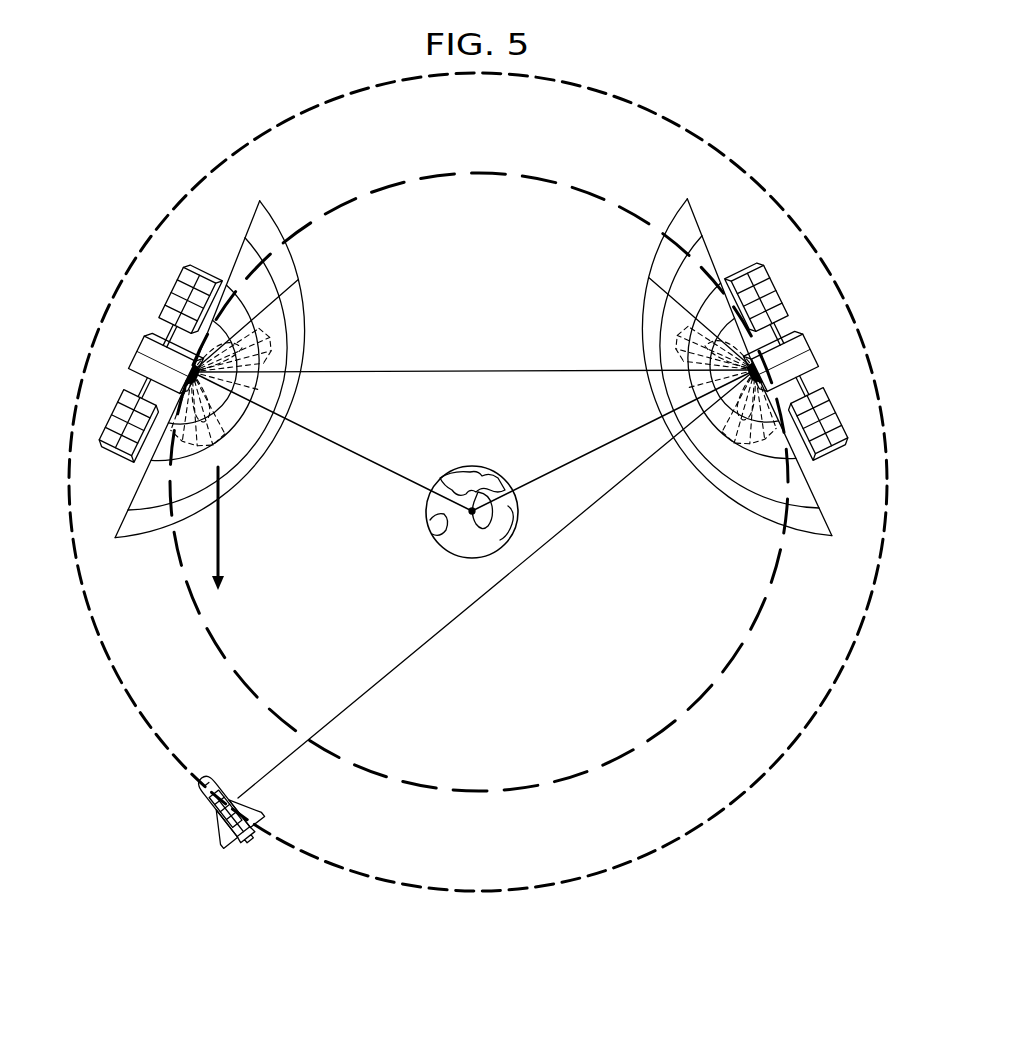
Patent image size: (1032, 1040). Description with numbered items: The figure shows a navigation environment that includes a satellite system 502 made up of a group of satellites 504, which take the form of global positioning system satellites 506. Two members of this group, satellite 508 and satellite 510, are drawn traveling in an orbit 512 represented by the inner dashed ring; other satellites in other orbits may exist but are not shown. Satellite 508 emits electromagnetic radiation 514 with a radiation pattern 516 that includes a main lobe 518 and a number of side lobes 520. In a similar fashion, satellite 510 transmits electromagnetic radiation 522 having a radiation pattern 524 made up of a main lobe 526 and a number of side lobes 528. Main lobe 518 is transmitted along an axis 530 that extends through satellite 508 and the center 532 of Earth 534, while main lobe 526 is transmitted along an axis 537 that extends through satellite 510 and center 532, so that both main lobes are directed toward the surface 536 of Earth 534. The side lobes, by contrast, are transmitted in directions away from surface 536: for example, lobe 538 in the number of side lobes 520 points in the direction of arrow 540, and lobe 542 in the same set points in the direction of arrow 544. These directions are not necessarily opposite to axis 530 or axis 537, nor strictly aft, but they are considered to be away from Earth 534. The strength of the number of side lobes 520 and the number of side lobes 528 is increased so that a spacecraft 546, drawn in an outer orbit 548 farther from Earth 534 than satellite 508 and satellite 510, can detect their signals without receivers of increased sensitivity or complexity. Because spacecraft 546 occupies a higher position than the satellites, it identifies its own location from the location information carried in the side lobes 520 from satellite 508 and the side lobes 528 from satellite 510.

The satellite system 502 is at (594, 108).
The group of satellites 504 is at (812, 277).
The global positioning system satellites 506 is at (118, 262).
The satellite 508 is at (207, 264).
The satellite 510 is at (742, 265).
The orbit 512 is at (607, 765).
The electromagnetic radiation 514 is at (300, 250).
The radiation pattern 516 is at (264, 332).
The main lobe 518 is at (260, 391).
The number of side lobes 520 is at (188, 456).
The electromagnetic radiation 522 is at (647, 320).
The radiation pattern 524 is at (661, 262).
The main lobe 526 is at (673, 397).
The number of side lobes 528 is at (746, 455).
The axis 530 is at (362, 458).
The center 532 is at (453, 567).
The Earth 534 is at (440, 528).
The surface 536 is at (450, 483).
The axis 537 is at (547, 471).
The lobe 538 is at (267, 358).
The arrow 540 is at (469, 369).
The lobe 542 is at (231, 424).
The arrow 544 is at (221, 548).
The spacecraft 546 is at (213, 821).
The orbit 548 is at (227, 157).